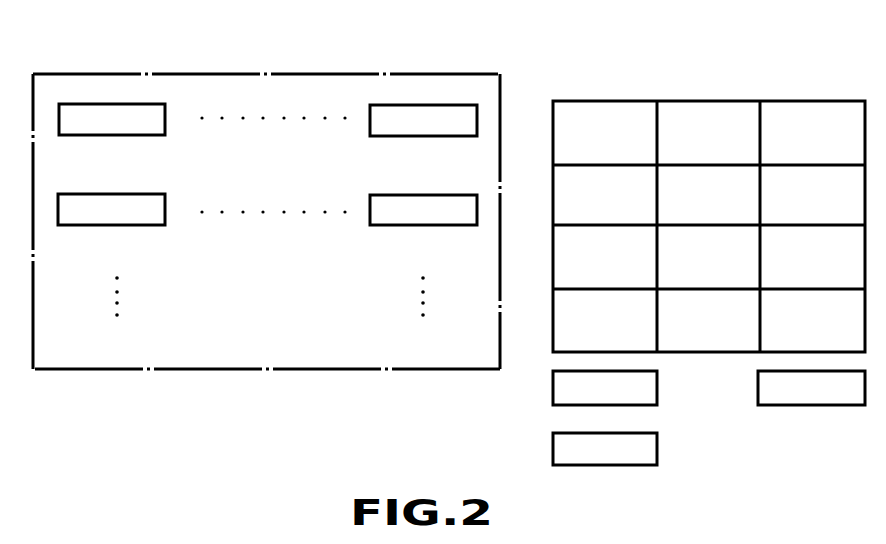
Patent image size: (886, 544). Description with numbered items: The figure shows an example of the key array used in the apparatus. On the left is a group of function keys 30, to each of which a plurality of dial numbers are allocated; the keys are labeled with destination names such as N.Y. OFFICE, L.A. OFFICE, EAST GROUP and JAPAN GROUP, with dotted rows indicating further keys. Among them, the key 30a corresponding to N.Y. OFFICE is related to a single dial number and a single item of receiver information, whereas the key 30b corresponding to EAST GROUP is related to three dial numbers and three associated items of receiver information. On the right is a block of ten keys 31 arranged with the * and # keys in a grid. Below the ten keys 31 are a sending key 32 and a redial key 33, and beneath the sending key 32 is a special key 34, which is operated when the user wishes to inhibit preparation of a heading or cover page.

The function keys 30 is at (432, 73).
The key corresponding to N.Y. OFFICE 30a is at (138, 105).
The key corresponding to EAST GROUP 30b is at (163, 205).
The ten keys 31 is at (737, 100).
The sending key 32 is at (658, 387).
The redial key 33 is at (825, 405).
The special key 34 is at (658, 452).